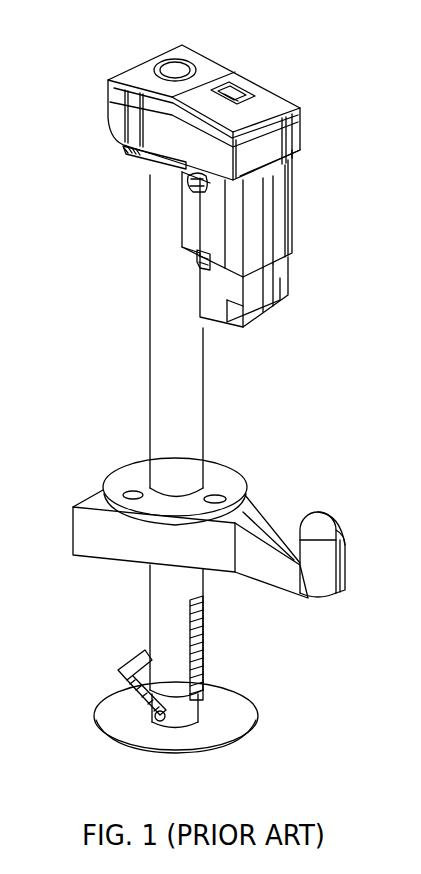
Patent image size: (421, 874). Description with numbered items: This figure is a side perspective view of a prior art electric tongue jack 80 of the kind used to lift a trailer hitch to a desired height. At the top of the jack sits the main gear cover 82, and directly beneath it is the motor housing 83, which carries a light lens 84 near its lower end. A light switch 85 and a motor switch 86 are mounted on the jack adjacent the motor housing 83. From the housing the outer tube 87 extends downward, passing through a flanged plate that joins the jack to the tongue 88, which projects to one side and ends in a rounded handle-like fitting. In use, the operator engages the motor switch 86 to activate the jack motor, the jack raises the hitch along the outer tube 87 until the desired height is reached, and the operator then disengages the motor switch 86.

The electric tongue jack 80 is at (188, 412).
The main gear cover 82 is at (272, 98).
The motor housing 83 is at (268, 233).
The light lens 84 is at (275, 313).
The light switch 85 is at (182, 198).
The motor switch 86 is at (197, 270).
The outer tube 87 is at (172, 378).
The tongue 88 is at (277, 528).